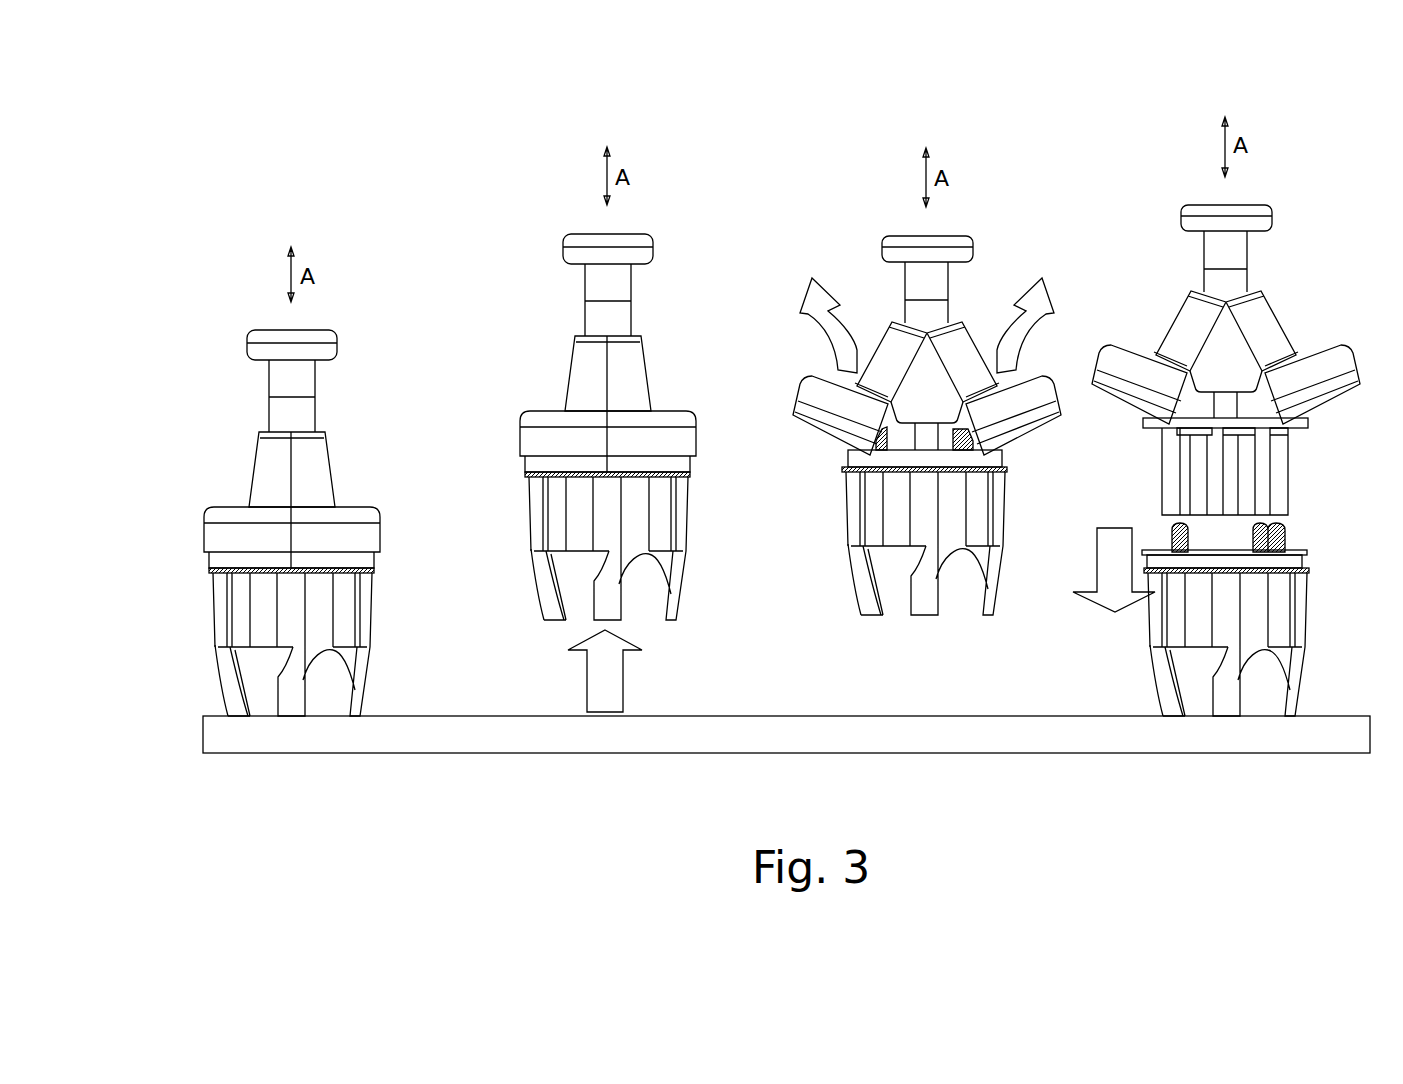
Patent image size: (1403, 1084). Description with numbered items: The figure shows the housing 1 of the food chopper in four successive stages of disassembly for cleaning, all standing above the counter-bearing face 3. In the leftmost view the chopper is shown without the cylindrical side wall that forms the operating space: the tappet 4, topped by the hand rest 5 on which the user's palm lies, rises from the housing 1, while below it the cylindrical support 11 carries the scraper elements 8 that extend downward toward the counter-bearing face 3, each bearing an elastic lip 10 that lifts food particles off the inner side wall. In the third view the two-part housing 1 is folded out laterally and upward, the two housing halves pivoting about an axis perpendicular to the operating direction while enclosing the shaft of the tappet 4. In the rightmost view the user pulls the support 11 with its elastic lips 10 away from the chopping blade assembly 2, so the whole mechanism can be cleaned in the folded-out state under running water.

The housing 1 is at (315, 455).
The chopping blade assembly 2 is at (1263, 472).
The counter-bearing face 3 is at (748, 736).
The tappet 4 is at (305, 387).
The hand rest 5 is at (330, 334).
The scraper element 8 is at (368, 665).
The elastic lip 10 is at (538, 582).
The support 11 is at (232, 596).